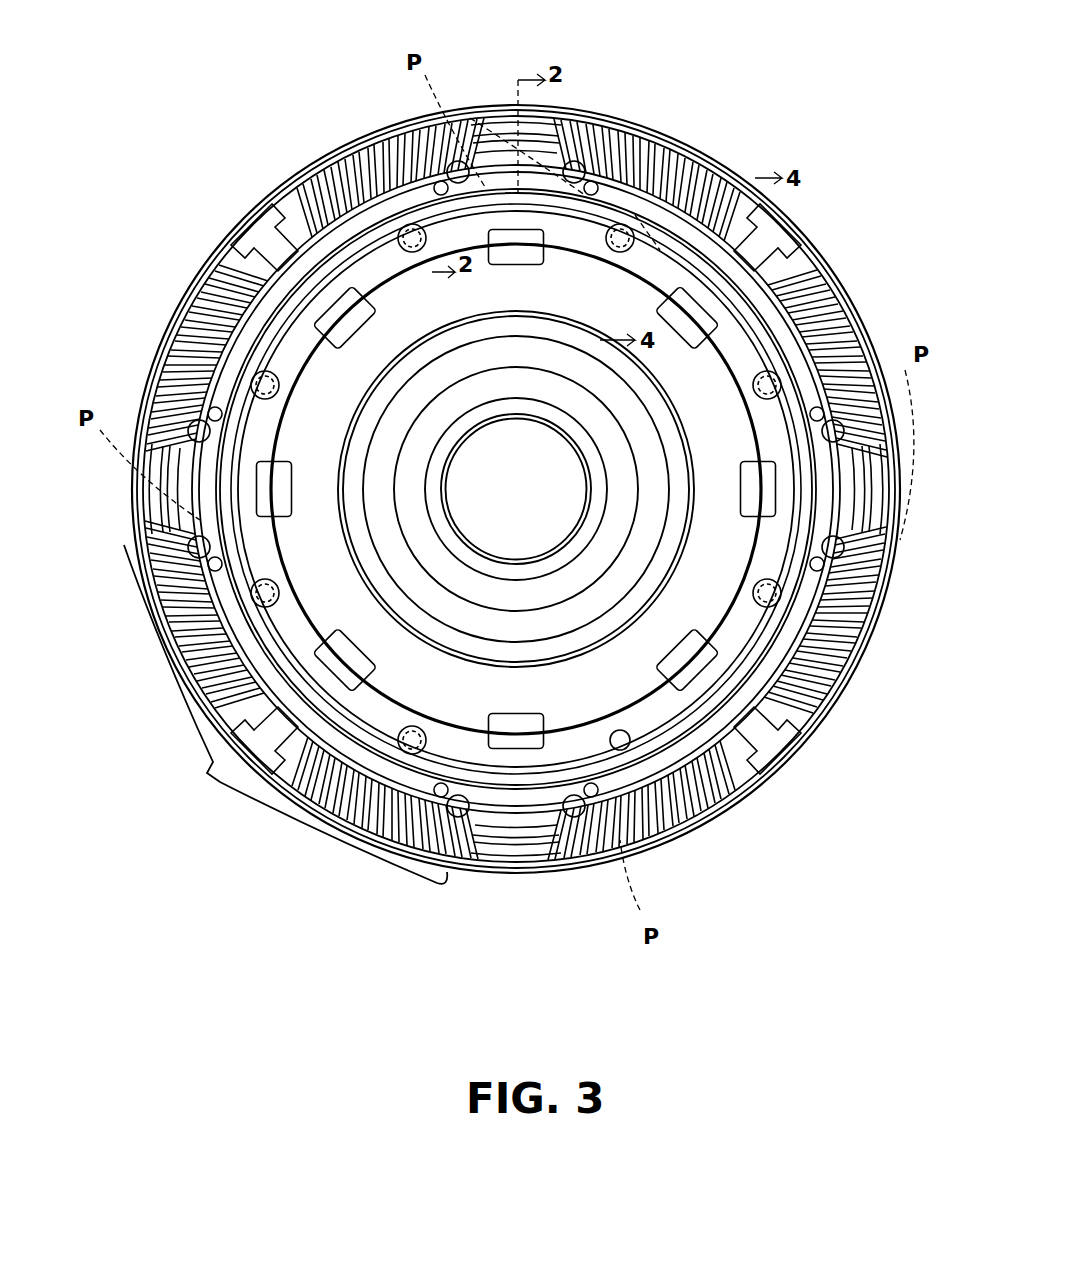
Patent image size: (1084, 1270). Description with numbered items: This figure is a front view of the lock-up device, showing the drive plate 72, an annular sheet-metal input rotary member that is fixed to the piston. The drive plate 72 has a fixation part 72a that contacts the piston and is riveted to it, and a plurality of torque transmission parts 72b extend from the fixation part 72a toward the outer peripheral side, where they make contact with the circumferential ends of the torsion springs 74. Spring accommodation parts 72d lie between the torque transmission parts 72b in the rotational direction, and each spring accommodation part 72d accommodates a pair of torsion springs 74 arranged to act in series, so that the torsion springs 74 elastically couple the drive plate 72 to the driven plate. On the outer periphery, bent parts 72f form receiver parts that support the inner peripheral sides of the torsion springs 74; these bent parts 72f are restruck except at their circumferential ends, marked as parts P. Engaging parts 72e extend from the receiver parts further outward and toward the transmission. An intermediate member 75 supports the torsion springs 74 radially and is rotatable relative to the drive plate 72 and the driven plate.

The drive plate 72 is at (575, 122).
The fixation part 72a is at (355, 722).
The torque transmission parts 72b is at (482, 118).
The spring accommodation parts 72d is at (215, 770).
The engaging parts 72e is at (380, 262).
The bent parts 72f is at (288, 272).
The torsion springs 74 is at (306, 176).
The intermediate member 75 is at (266, 216).